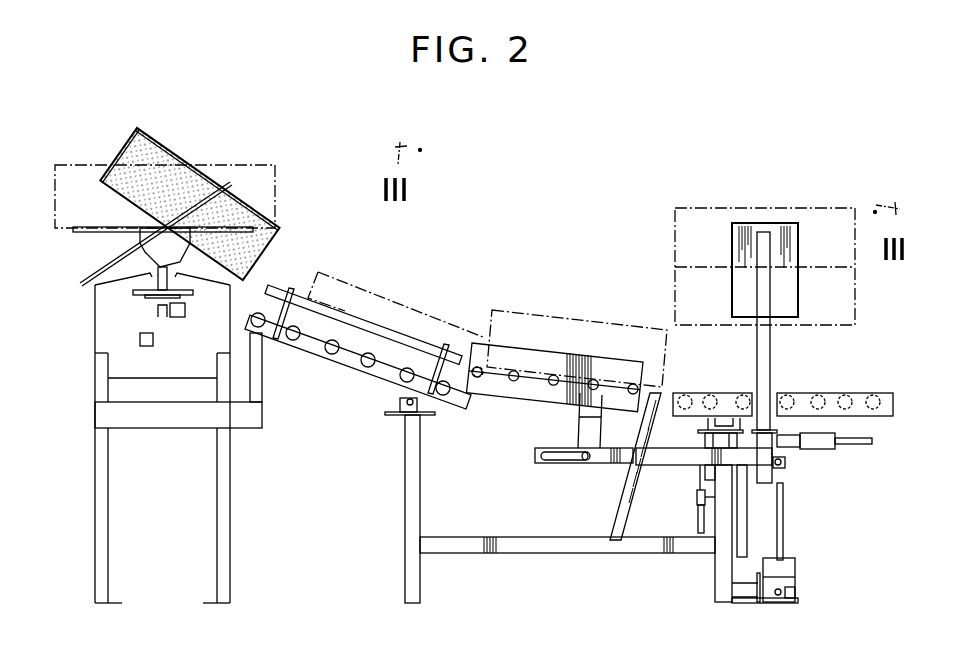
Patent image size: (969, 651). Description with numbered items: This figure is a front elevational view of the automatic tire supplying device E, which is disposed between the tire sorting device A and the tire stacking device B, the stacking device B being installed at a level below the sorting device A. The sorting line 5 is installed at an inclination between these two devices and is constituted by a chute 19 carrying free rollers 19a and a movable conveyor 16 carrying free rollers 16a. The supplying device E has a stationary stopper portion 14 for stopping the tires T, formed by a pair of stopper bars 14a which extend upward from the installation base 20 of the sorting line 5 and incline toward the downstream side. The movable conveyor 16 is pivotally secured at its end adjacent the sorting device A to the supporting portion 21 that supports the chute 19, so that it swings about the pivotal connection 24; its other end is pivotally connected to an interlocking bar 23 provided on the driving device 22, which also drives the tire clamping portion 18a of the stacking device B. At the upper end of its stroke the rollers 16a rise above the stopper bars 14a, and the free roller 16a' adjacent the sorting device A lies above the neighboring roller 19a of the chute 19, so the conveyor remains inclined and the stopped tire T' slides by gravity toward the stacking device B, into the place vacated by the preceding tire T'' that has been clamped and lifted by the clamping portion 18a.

The sorting device A is at (138, 257).
The stacking device B is at (880, 368).
The automatic tire supplying device E is at (563, 308).
The tire T is at (395, 299).
The stopped tire T' is at (577, 316).
The preceding tire T'' is at (744, 266).
The sorting line 5 is at (387, 327).
The stationary stopper portion 14 is at (612, 512).
The stopper bar 14a is at (633, 487).
The movable conveyor 16 is at (530, 383).
The free roller 16a is at (545, 373).
The free roller adjacent to the sorting device 16a' is at (488, 324).
The tire clamping portion 18a is at (799, 248).
The chute 19 is at (347, 358).
The free roller 19a is at (330, 355).
The installation base 20 is at (616, 544).
The supporting portion 21 is at (404, 506).
The driving device 22 is at (793, 578).
The interlocking bar 23 is at (602, 458).
The pivotal connection 24 is at (406, 408).